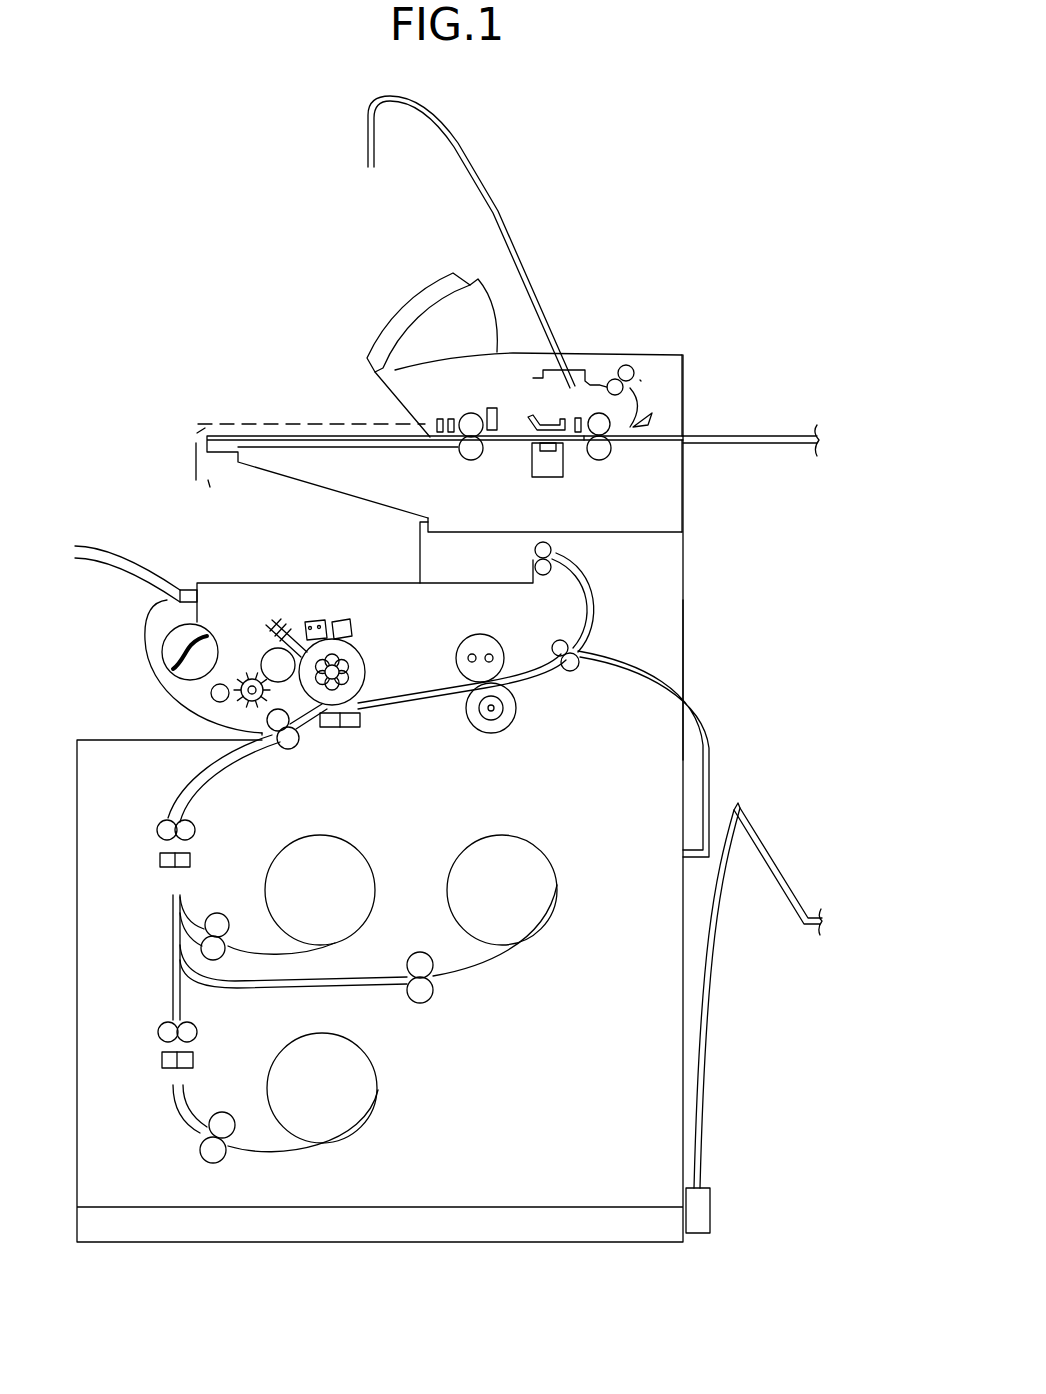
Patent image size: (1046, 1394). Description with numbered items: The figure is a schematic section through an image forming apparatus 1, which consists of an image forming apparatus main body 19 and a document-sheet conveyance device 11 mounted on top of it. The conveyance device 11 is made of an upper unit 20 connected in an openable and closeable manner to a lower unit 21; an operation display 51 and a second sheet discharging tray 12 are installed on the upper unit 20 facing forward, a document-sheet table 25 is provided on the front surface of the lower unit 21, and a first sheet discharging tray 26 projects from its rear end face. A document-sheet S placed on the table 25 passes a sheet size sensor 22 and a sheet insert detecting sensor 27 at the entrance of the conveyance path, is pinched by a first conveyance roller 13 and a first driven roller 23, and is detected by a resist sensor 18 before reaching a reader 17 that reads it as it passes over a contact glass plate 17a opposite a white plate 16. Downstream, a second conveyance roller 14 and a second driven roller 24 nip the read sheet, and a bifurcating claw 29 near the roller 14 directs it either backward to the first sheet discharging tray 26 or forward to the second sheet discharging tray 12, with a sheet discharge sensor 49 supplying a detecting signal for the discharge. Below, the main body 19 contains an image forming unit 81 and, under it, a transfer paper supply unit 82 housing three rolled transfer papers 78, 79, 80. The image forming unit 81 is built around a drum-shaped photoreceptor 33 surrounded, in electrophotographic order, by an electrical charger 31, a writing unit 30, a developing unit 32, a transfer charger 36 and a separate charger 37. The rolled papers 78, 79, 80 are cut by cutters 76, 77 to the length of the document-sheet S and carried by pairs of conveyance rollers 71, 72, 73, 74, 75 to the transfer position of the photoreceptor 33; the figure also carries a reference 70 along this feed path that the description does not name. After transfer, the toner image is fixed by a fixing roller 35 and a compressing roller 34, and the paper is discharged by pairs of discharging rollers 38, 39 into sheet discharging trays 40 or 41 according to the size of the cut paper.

The image forming apparatus 1 is at (706, 182).
The document-sheet conveyance device 11 is at (697, 340).
The second sheet discharging tray 12 is at (465, 150).
The first conveyance roller 13 is at (465, 454).
The second conveyance roller 14 is at (611, 447).
The white plate 16 is at (537, 412).
The reader 17 is at (545, 468).
The contact glass plate 17a is at (552, 452).
The resist sensor 18 is at (492, 408).
The image forming apparatus main body 19 is at (724, 592).
The upper unit 20 is at (672, 377).
The lower unit 21 is at (672, 493).
The sheet size sensor 22 is at (452, 419).
The first driven roller 23 is at (472, 419).
The second driven roller 24 is at (593, 417).
The document-sheet table 25 is at (223, 447).
The first sheet discharging tray 26 is at (796, 432).
The sheet insert detecting sensor 27 is at (438, 420).
The bifurcating claw 29 is at (655, 405).
The writing unit 30 is at (280, 620).
The electrical charger 31 is at (320, 621).
The developing unit 32 is at (262, 657).
The photoreceptor 33 is at (366, 670).
The compressing roller 34 is at (505, 722).
The fixing roller 35 is at (492, 643).
The transfer charger 36 is at (333, 727).
The separate charger 37 is at (360, 722).
The pair of discharging rollers 38 is at (595, 680).
The pair of discharging rollers 39 is at (577, 552).
The sheet discharging tray 40 is at (358, 583).
The sheet discharging tray 41 is at (742, 806).
The sheet discharge sensor 49 is at (580, 440).
The operation display 51 is at (425, 302).
The sheet conveying path 70 is at (266, 757).
The pair of conveyance rollers 71 is at (214, 822).
The pair of conveyance rollers 72 is at (231, 895).
The pair of conveyance rollers 73 is at (445, 1012).
The pair of conveyance rollers 74 is at (215, 1028).
The pair of conveyance rollers 75 is at (236, 1095).
The cutter 76 is at (160, 860).
The cutter 77 is at (162, 1062).
The transfer paper 78 is at (347, 855).
The transfer paper 79 is at (528, 853).
The transfer paper 80 is at (360, 1062).
The image forming unit 81 is at (180, 692).
The transfer paper supply unit 82 is at (668, 1062).
The document-sheet S is at (282, 424).